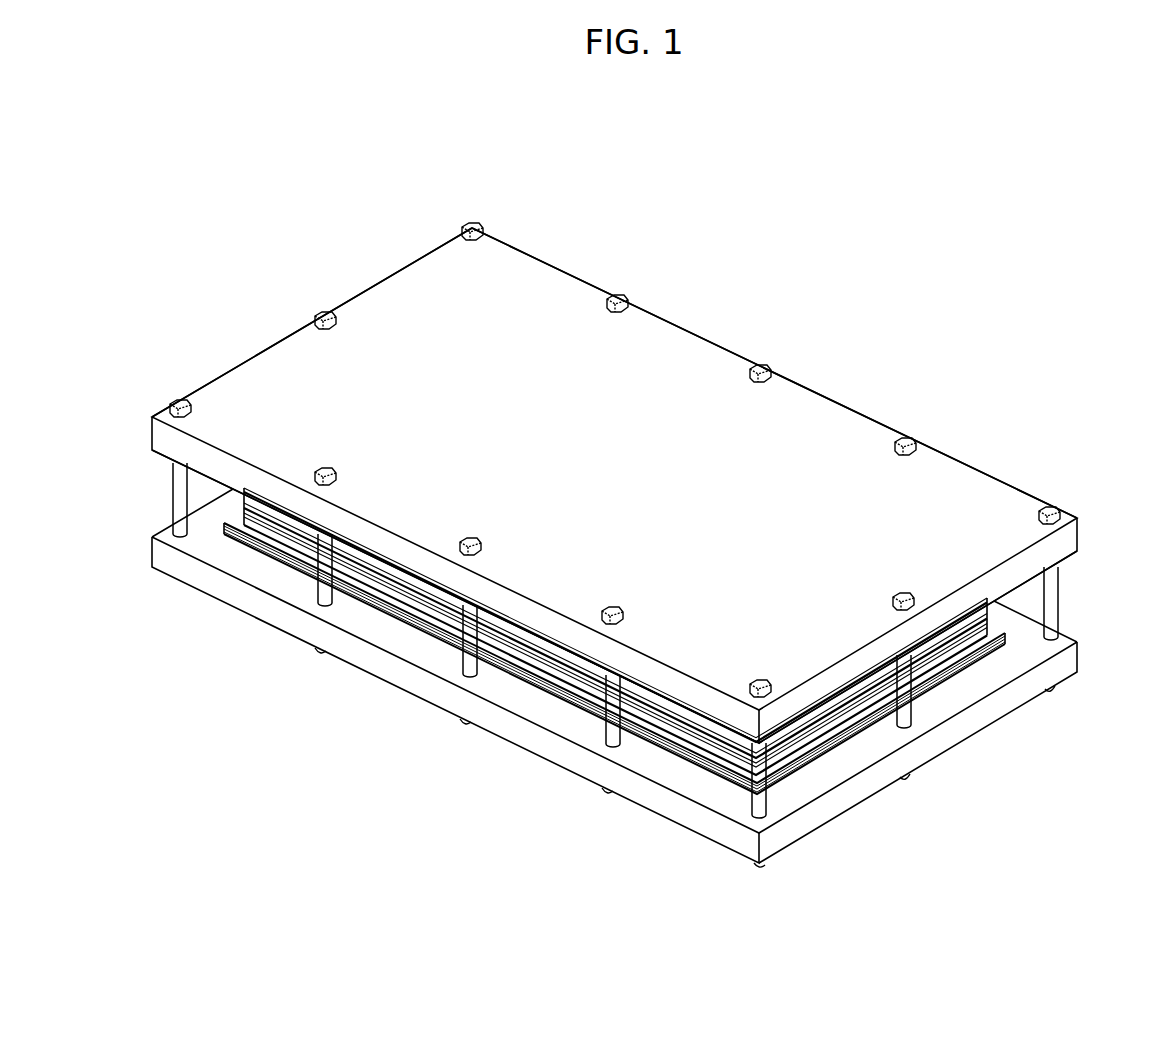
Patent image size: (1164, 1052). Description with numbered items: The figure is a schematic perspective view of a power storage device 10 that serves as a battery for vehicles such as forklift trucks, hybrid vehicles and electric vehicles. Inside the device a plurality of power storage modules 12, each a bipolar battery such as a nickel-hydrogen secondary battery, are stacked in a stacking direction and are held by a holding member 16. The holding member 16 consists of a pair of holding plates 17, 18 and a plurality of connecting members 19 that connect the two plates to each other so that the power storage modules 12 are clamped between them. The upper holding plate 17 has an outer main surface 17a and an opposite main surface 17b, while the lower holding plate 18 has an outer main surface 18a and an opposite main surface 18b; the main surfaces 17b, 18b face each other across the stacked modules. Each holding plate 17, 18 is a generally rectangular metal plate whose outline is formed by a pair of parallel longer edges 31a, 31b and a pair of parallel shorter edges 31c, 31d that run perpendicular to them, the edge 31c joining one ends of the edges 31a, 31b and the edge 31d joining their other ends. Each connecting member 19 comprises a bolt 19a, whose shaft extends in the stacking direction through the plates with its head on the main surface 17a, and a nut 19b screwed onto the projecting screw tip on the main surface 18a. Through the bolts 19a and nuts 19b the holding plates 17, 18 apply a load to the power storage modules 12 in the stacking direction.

The power storage device 10 is at (1006, 268).
The power storage module 12 is at (243, 497).
The holding member 16 is at (143, 394).
The holding plate 17 is at (584, 472).
The main surface 17a is at (265, 370).
The main surface 17b is at (203, 477).
The holding plate 18 is at (614, 676).
The main surface 18a is at (557, 776).
The main surface 18b is at (533, 712).
The connecting member 19 is at (615, 570).
The bolt 19a is at (760, 370).
The nut 19b is at (670, 868).
The edge 31a is at (960, 456).
The edge 31b is at (340, 663).
The edge 31c is at (375, 283).
The edge 31d is at (975, 585).